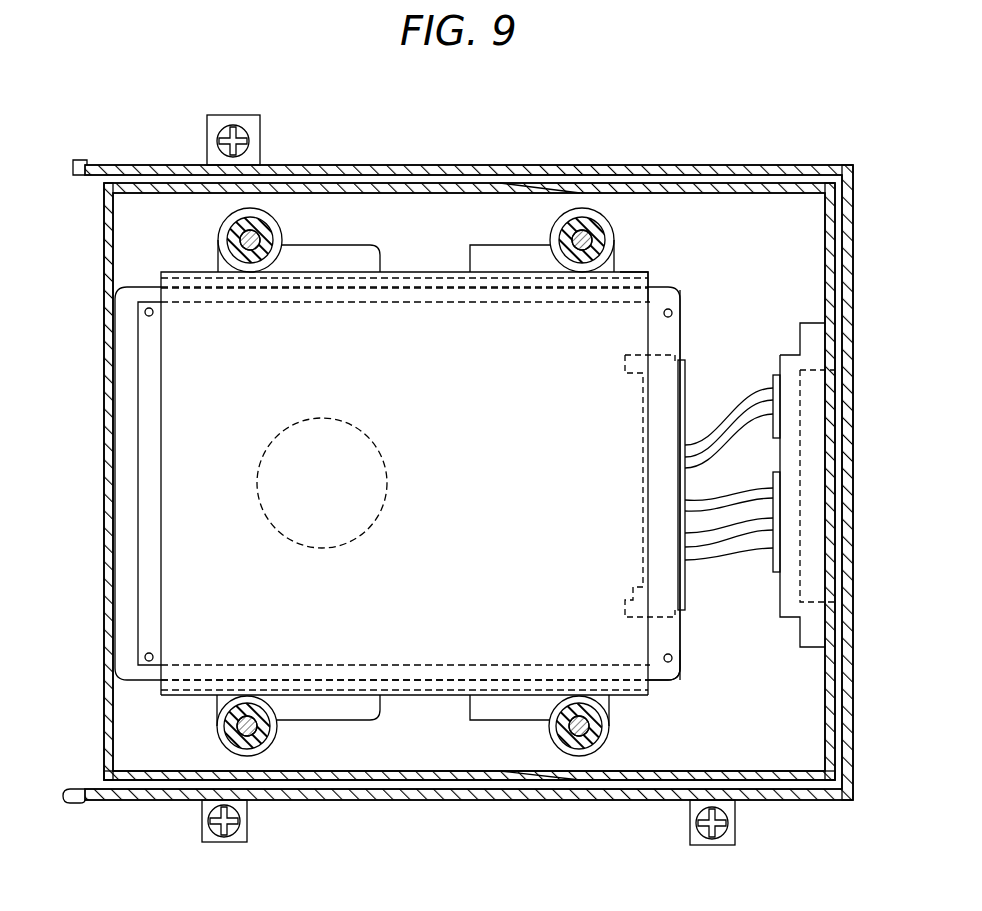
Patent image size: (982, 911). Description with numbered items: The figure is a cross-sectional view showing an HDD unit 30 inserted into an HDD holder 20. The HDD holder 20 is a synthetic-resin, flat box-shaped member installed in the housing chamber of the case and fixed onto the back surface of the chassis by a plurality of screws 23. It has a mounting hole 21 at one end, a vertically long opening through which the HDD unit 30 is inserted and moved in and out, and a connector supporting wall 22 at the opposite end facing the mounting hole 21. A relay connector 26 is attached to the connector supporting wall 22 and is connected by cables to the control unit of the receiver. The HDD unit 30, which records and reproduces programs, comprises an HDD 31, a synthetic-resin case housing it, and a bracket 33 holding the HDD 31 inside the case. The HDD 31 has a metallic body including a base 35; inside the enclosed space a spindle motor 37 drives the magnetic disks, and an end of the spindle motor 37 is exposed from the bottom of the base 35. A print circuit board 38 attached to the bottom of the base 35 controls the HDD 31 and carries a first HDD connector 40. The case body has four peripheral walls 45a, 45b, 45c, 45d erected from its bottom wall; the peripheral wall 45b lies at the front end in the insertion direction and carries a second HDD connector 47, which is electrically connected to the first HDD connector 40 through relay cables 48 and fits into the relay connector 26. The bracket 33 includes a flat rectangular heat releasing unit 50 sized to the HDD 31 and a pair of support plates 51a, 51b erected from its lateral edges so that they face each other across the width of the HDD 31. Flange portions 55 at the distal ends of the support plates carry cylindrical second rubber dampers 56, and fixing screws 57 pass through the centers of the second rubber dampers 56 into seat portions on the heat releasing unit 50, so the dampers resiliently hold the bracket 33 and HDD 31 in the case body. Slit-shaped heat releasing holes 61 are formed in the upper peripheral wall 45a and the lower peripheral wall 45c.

The HDD holder 20 is at (625, 172).
The mounting hole 21 is at (72, 802).
The connector supporting wall 22 is at (853, 683).
The screws 23 is at (240, 130).
The relay connector 26 is at (820, 490).
The HDD unit 30 is at (104, 240).
The HDD 31 is at (130, 486).
The bracket 33 is at (643, 272).
The base 35 is at (666, 680).
The spindle motor 37 is at (386, 470).
The print circuit board 38 is at (672, 339).
The first HDD connector 40 is at (650, 420).
The peripheral wall 45a is at (412, 183).
The peripheral wall 45b is at (835, 313).
The peripheral wall 45c is at (422, 800).
The peripheral wall 45d is at (108, 567).
The second HDD connector 47 is at (788, 604).
The relay cables 48 is at (732, 448).
The heat releasing unit 50 is at (178, 376).
The support plate 51a is at (422, 272).
The support plate 51b is at (418, 698).
The flange portions 55 is at (334, 254).
The second rubber dampers 56 is at (244, 250).
The fixing screws 57 is at (258, 248).
The heat releasing holes 61 is at (568, 192).